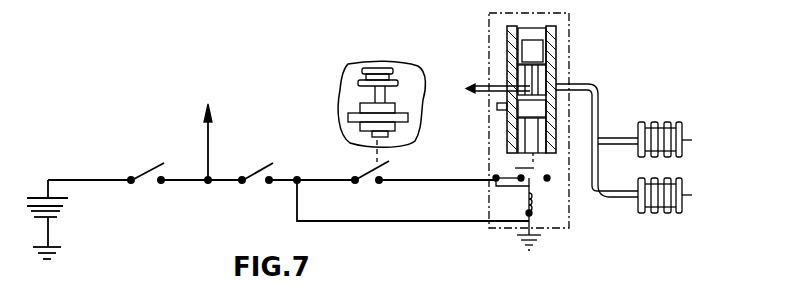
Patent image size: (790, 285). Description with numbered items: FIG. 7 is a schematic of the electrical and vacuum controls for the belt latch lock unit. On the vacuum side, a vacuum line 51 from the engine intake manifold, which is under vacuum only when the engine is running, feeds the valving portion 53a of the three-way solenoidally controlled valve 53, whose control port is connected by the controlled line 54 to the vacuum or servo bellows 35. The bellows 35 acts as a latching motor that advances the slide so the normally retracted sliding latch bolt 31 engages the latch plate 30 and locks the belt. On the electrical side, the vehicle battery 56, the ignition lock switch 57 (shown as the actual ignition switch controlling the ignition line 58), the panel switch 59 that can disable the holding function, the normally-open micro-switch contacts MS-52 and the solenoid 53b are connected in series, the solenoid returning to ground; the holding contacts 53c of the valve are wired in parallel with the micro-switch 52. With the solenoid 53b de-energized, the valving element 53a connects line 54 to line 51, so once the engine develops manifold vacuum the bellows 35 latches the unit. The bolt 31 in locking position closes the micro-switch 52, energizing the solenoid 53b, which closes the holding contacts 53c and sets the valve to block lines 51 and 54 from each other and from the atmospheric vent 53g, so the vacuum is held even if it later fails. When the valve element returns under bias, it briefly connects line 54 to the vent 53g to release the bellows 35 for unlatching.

The latch plate 30 is at (405, 116).
The sliding latch bolt 31 is at (401, 136).
The vacuum or servo bellows 35 is at (391, 75).
The vacuum line 51 is at (490, 84).
The micro-switch MS- 52 is at (367, 172).
The three-way solenoidally controlled valve 53 is at (578, 47).
The valving portion 53a is at (520, 80).
The solenoid 53b is at (527, 203).
The holding contacts 53c is at (528, 172).
The valve atmospheric vent 53g is at (497, 110).
The controlled line 54 is at (603, 115).
The vehicle battery 56 is at (73, 209).
The ignition lock switch 57 is at (147, 171).
The ignition line 58 is at (209, 148).
The panel switch 59 is at (262, 168).